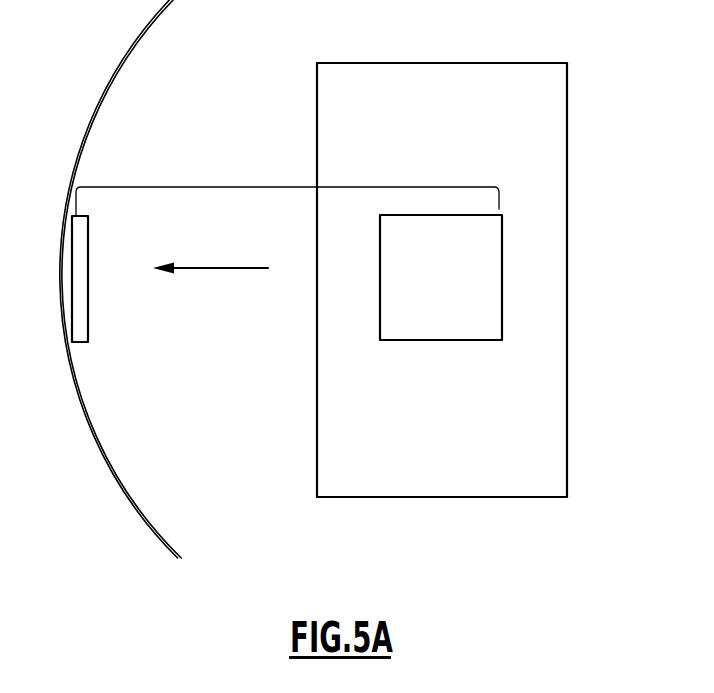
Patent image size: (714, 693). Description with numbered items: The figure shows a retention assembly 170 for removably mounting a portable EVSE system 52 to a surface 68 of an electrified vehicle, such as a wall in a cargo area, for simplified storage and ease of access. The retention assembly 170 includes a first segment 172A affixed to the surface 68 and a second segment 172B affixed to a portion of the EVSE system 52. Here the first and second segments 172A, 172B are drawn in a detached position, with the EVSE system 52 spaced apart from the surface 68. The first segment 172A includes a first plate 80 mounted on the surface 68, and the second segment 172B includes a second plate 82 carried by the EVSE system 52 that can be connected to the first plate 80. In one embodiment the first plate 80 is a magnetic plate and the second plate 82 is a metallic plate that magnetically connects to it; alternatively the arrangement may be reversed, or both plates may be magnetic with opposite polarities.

The surface 68 is at (97, 108).
The EVSE system 52 is at (568, 139).
The second plate 82 is at (433, 318).
The retention assembly 170 is at (232, 187).
The first plate 80 is at (83, 255).
The first segment 172A is at (89, 353).
The second segment 172B is at (505, 305).